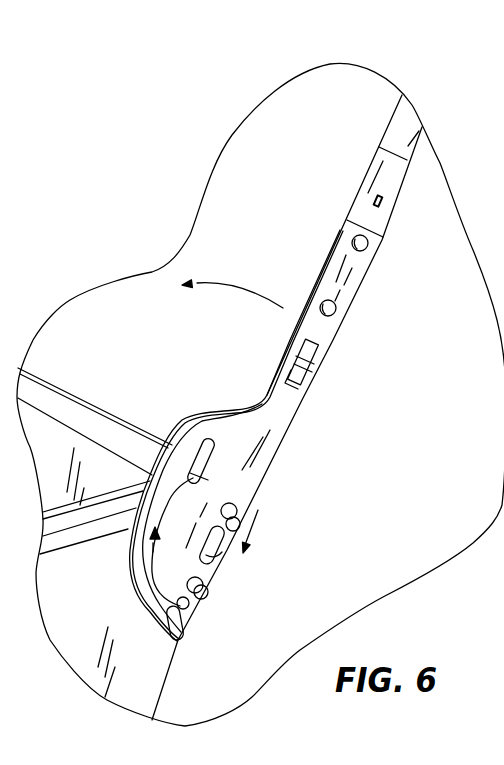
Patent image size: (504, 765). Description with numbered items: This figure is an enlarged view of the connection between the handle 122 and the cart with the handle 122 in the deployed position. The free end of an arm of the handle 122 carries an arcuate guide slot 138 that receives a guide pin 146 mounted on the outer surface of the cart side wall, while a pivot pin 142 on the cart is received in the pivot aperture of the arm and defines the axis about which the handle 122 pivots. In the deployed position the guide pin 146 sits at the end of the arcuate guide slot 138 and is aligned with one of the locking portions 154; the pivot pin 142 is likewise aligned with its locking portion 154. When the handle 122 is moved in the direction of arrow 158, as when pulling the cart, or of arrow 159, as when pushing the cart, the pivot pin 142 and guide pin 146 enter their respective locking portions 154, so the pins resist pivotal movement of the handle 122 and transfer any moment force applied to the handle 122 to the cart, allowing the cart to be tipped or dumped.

The handle 122 is at (402, 332).
The arcuate guide slot 138 is at (150, 570).
The pivot pin 142 is at (240, 511).
The guide pin 146 is at (207, 594).
The locking portion 154 is at (209, 438).
The arrow 158 is at (329, 365).
The arrow 159 is at (252, 535).